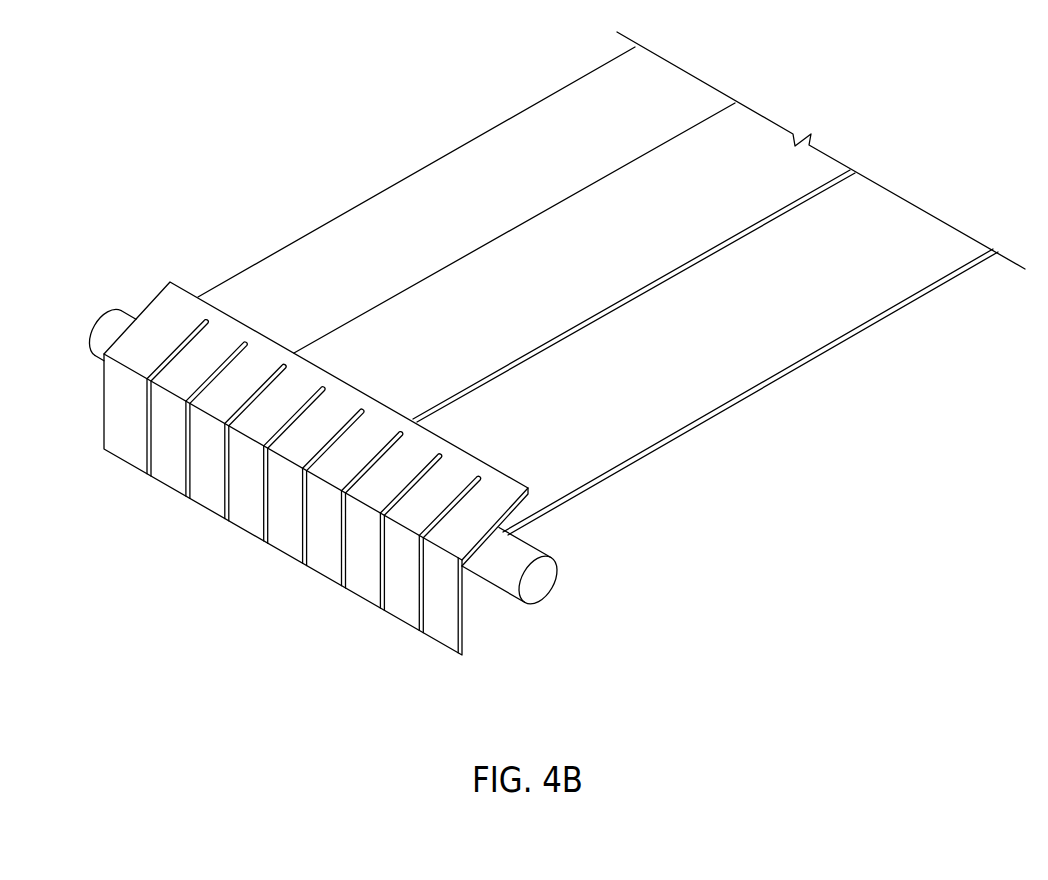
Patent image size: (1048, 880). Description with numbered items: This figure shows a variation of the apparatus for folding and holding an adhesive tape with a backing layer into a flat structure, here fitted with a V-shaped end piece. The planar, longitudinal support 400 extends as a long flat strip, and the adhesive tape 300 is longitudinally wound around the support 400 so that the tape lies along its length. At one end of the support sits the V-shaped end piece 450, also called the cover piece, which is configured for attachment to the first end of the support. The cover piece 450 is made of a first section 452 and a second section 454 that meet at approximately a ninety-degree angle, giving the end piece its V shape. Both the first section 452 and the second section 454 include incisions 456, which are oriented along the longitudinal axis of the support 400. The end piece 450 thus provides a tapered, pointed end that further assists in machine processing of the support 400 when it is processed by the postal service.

The adhesive tape 300 is at (505, 258).
The planar, longitudinal support 400 is at (462, 170).
The V-shaped end piece 450 is at (306, 467).
The first section 452 is at (158, 328).
The second section 454 is at (122, 420).
The incisions 456 is at (298, 515).